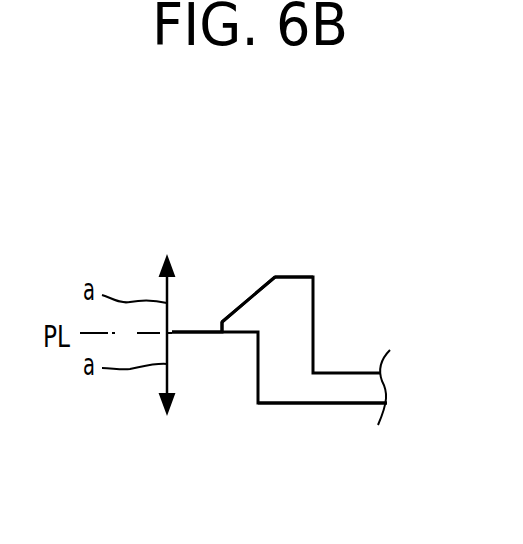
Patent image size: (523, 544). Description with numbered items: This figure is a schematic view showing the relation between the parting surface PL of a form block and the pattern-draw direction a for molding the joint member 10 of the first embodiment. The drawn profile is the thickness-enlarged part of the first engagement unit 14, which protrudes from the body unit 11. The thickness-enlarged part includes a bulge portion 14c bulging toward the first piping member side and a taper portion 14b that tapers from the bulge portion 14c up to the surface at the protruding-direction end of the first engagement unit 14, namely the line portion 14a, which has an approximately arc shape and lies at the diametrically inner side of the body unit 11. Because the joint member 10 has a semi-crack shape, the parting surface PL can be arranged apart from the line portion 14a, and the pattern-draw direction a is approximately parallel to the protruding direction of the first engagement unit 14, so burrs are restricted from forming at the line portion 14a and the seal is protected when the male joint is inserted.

The joint member 10 is at (262, 425).
The body unit 11 is at (330, 387).
The first engagement unit 14 is at (282, 353).
The line portion 14a is at (300, 277).
The taper portion 14b is at (248, 299).
The bulge portion 14c is at (212, 328).